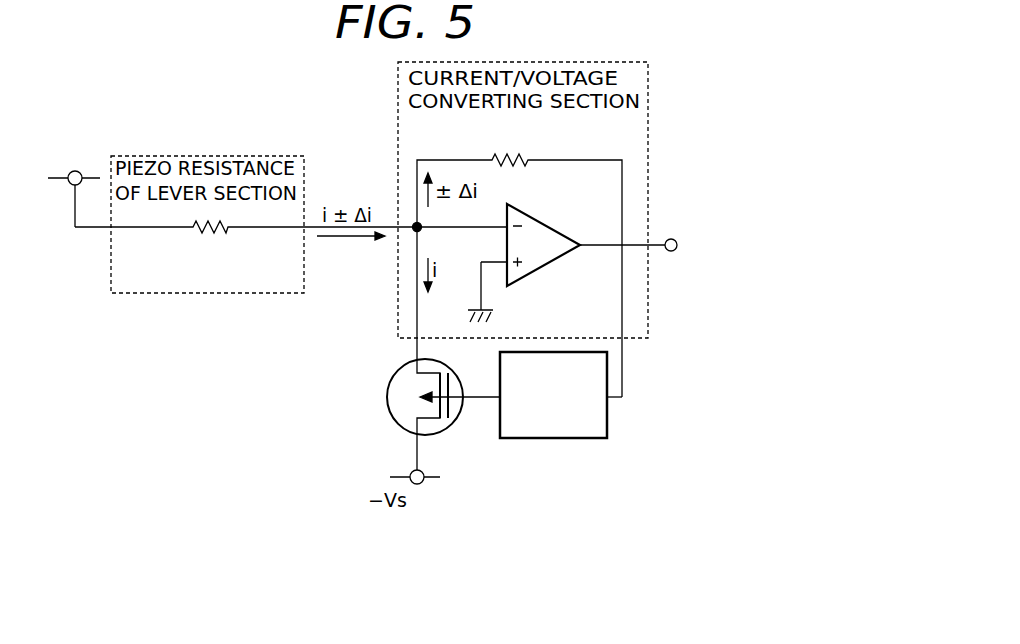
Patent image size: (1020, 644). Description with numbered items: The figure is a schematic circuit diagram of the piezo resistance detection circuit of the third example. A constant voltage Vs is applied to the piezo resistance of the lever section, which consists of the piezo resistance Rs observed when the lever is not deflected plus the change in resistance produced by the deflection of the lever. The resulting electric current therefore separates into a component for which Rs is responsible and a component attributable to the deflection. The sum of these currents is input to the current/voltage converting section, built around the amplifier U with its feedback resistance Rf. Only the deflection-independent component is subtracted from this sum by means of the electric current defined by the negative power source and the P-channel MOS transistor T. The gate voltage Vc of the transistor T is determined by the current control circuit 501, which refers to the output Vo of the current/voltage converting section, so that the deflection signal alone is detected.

The current control circuit 501 is at (587, 442).
The MOS transistor T is at (413, 348).
The operational amplifier U is at (543, 245).
The feedback resistor Rf is at (519, 261).
The piezo resistance Rs is at (291, 242).
The constant voltage Vs is at (74, 186).
The output Vo is at (633, 259).
The gate voltage Vc is at (465, 381).